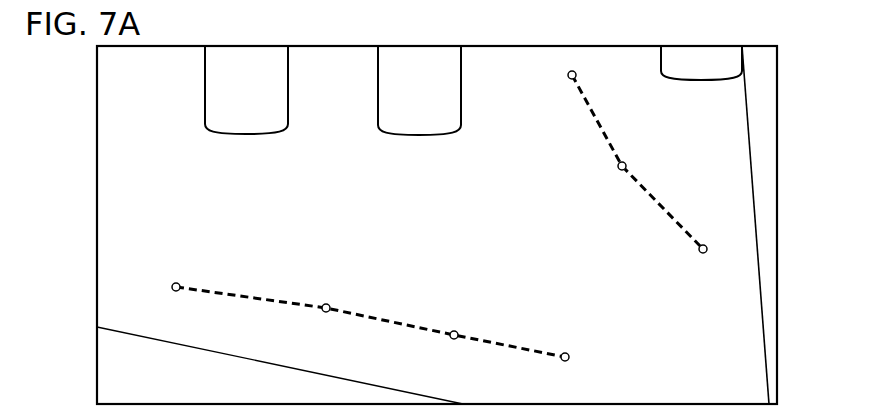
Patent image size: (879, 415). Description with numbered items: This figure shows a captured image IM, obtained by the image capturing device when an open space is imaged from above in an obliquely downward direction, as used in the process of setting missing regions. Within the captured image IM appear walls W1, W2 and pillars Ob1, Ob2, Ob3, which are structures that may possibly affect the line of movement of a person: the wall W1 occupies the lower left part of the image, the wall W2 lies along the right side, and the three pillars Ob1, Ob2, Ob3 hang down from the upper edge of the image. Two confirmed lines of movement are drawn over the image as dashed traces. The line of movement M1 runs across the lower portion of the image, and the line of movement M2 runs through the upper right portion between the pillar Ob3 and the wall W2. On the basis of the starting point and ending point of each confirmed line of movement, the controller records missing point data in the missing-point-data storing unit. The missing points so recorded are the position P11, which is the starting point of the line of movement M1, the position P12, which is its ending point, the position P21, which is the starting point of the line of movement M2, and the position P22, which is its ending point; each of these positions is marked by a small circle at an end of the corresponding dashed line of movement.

The captured image IM is at (777, 176).
The wall W1 is at (195, 388).
The wall W2 is at (764, 128).
The pillar Ob1 is at (288, 100).
The pillar Ob2 is at (449, 105).
The pillar Ob3 is at (734, 63).
The line of movement M1 is at (392, 321).
The line of movement M2 is at (657, 197).
The position P11 is at (568, 354).
The position P12 is at (179, 284).
The position P21 is at (576, 74).
The position P22 is at (733, 223).